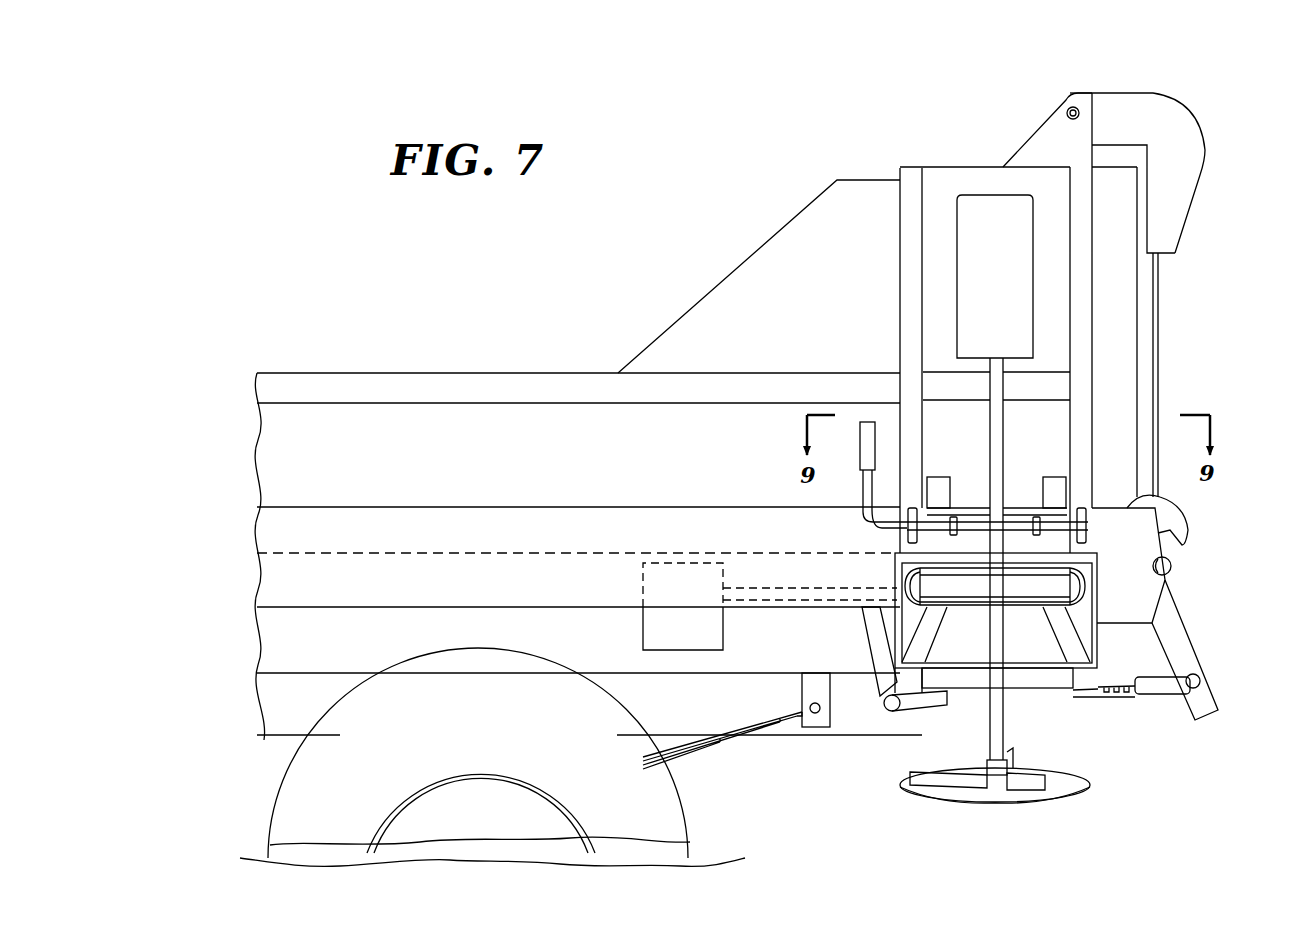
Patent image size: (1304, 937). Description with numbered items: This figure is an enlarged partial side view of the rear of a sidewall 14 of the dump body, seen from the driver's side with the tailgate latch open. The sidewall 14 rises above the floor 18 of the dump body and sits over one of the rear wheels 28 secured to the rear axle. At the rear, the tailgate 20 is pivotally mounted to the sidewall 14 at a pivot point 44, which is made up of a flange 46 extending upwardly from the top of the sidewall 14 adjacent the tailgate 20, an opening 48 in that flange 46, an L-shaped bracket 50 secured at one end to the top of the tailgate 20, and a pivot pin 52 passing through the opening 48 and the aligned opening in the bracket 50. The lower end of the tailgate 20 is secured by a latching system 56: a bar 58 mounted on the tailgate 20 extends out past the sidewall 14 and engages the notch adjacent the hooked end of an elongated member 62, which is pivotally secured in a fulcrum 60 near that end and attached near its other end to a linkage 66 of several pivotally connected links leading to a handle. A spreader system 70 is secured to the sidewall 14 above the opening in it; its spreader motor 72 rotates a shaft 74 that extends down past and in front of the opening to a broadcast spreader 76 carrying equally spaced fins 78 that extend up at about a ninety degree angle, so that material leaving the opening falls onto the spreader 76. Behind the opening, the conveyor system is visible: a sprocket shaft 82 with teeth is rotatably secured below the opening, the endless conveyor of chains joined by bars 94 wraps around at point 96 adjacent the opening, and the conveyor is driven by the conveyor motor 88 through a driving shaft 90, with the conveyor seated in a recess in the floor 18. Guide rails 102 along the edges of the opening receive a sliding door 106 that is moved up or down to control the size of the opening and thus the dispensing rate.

The sidewall 14 is at (662, 474).
The floor 18 is at (560, 553).
The tailgate 20 is at (1110, 337).
The rear wheels 28 is at (478, 753).
The pivot point 44 is at (1080, 82).
The flange 46 is at (1042, 138).
The opening 48 is at (1068, 106).
The L-shaped bracket 50 is at (1183, 128).
The pivot pin 52 is at (1080, 108).
The latching system 56 is at (1194, 533).
The bar 58 is at (1165, 566).
The fulcrum 60 is at (1128, 565).
The elongated member 62 is at (1180, 653).
The linkage 66 is at (878, 642).
The spreader system 70 is at (948, 304).
The spreader motor 72 is at (995, 276).
The shaft 74 is at (996, 419).
The broadcast spreader 76 is at (1065, 783).
The fins 78 is at (940, 778).
The sprocket shaft 82 is at (1075, 588).
The conveyor motor 88 is at (683, 606).
The driving shaft 90 is at (773, 595).
The bars 94 is at (1023, 590).
The wrap-around point 96 is at (965, 592).
The guide rail 102 is at (945, 492).
The door 106 is at (997, 535).